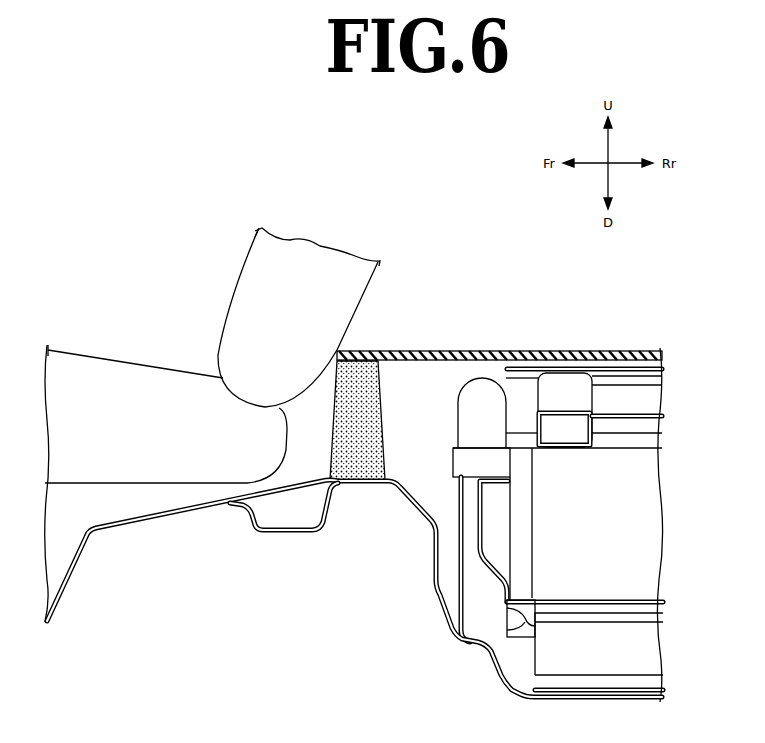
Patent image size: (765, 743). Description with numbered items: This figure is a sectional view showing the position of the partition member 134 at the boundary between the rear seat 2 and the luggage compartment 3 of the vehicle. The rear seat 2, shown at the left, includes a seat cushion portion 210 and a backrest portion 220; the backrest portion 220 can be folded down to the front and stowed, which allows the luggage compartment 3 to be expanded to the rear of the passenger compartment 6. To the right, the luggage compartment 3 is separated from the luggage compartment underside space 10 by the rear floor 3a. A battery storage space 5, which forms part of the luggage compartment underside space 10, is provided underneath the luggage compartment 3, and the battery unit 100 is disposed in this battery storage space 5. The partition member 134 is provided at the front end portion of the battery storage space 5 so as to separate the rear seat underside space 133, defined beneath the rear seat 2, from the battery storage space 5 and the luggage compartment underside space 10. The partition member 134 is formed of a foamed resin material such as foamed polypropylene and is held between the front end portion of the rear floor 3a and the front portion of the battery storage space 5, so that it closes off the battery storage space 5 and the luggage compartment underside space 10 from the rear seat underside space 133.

The rear seat 2 is at (297, 240).
The backrest portion 220 is at (320, 282).
The passenger compartment 6 is at (137, 233).
The seat cushion portion 210 is at (125, 390).
The luggage compartment 3 is at (500, 482).
The rear floor 3a is at (466, 350).
The battery unit 100 is at (663, 433).
The partition member 134 is at (366, 484).
The battery storage space 5 is at (354, 576).
The luggage compartment underside space 10 is at (354, 588).
The rear seat underside space 133 is at (87, 538).